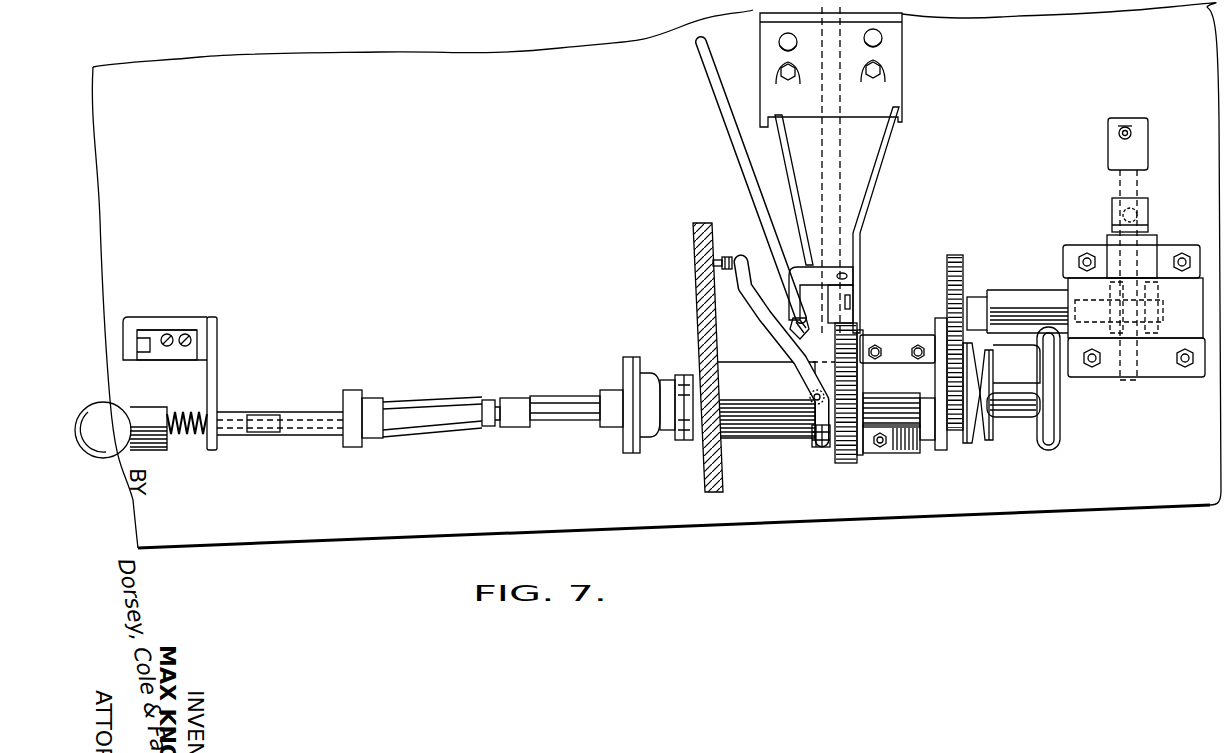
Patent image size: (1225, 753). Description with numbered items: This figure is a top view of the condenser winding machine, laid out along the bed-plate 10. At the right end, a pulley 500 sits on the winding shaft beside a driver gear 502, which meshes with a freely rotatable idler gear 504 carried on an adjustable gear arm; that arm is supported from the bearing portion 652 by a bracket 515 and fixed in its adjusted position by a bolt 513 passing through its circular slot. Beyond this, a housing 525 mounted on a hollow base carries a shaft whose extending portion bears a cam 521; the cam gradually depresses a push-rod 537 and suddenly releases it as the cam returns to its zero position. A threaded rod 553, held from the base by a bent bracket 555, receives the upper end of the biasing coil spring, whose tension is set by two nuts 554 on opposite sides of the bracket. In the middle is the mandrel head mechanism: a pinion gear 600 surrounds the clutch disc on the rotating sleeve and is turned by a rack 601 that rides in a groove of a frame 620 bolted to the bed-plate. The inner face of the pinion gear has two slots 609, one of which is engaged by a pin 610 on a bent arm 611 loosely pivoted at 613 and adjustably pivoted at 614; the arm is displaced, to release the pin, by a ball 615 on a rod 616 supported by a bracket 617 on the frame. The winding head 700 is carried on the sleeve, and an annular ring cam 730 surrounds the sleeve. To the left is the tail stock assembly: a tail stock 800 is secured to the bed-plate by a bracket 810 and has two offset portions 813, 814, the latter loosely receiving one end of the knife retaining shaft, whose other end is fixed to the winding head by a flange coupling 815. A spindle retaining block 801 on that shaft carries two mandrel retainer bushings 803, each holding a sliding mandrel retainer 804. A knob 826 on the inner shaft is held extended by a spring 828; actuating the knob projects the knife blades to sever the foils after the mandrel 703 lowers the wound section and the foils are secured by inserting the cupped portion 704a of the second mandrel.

The bed-plate 10 is at (393, 527).
The pulley 500 is at (996, 440).
The driver gear 502 is at (963, 445).
The idler gear 504 is at (957, 257).
The bolt 513 is at (953, 450).
The bracket 515 is at (933, 447).
The cam 521 is at (1149, 210).
The housing 525 is at (1070, 247).
The push-rod 537 is at (1137, 194).
The threaded rod 553 is at (1133, 128).
The nuts 554 is at (1117, 138).
The bent bracket 555 is at (1150, 143).
The pinion gear 600 is at (847, 465).
The rack 601 is at (847, 163).
The slots 609 is at (845, 329).
The pin 610 is at (813, 453).
The bent arm 611 is at (772, 330).
The loose pivot 613 is at (823, 450).
The adjustable pivot 614 is at (726, 257).
The ball 615 is at (797, 313).
The rod 616 is at (712, 92).
The bracket 617 is at (825, 268).
The frame 620 is at (889, 142).
The bearing portion 652 is at (895, 447).
The winding head 700 is at (640, 455).
The mandrel 703 is at (550, 403).
The cupped portion 704a is at (517, 417).
The annular ring cam 730 is at (690, 460).
The tail stock 800 is at (125, 318).
The spindle retaining block 801 is at (357, 450).
The mandrel retainer bushings 803 is at (377, 397).
The mandrel retainer 804 is at (453, 427).
The bracket 810 is at (175, 353).
The offset portion 813 is at (178, 317).
The offset portion 814 is at (217, 366).
The flange coupling 815 is at (613, 427).
The knob 826 is at (84, 415).
The spring 828 is at (190, 438).